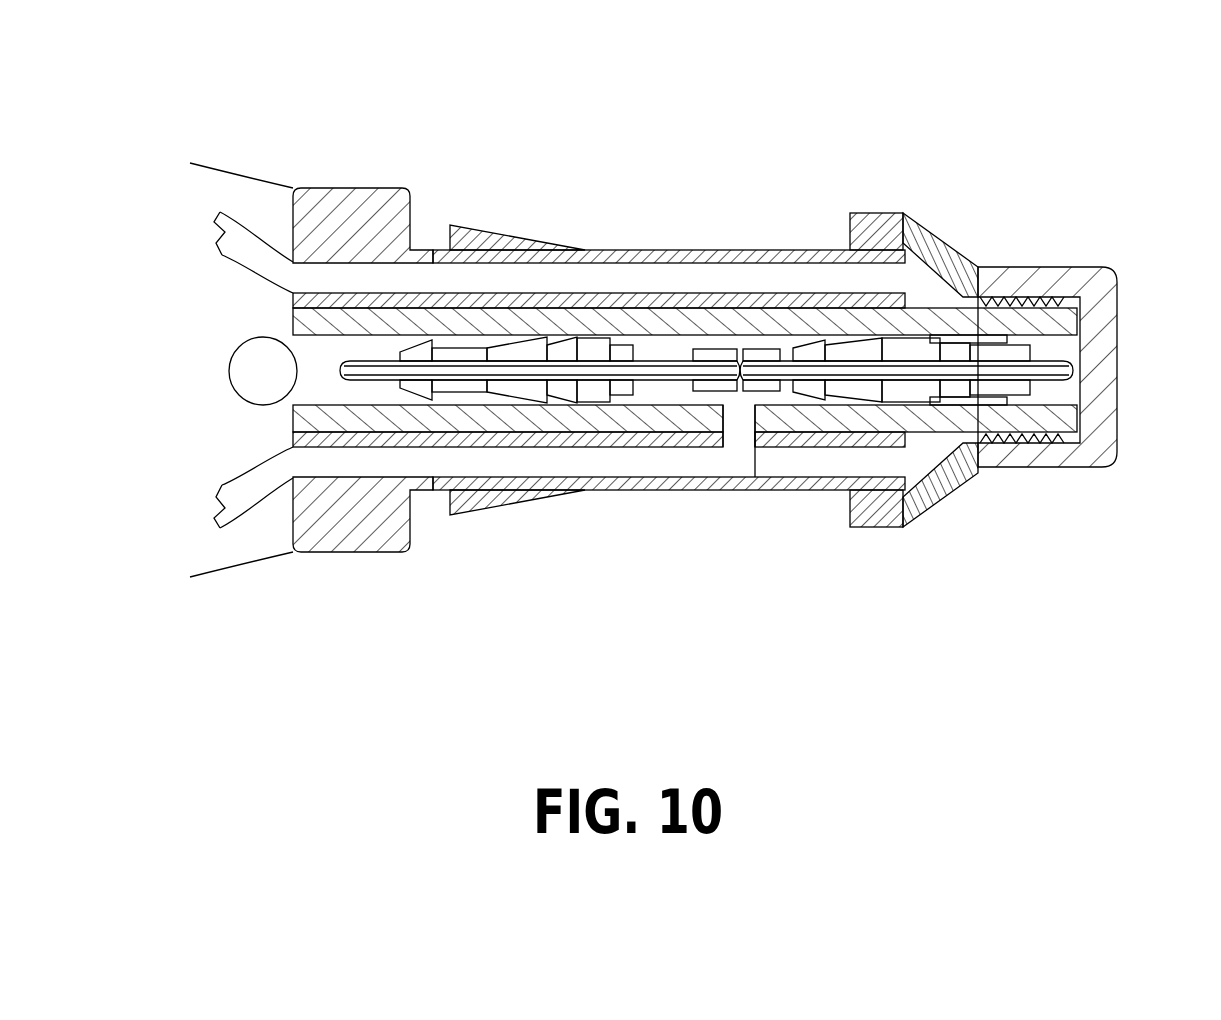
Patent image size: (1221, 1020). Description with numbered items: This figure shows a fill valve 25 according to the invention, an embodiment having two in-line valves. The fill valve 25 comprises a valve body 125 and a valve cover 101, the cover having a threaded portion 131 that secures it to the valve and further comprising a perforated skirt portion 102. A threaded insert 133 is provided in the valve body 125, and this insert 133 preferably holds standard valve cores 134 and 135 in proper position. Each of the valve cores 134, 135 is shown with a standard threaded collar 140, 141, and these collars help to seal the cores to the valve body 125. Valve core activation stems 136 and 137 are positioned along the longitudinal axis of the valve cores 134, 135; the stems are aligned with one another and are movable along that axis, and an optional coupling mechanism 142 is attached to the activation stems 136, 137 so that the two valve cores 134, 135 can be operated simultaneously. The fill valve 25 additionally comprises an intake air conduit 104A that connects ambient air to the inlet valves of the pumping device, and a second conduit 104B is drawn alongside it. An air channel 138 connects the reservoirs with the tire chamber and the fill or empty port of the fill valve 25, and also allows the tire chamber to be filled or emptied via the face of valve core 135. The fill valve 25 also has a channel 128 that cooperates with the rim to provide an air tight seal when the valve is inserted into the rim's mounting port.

The fill valve 25 is at (666, 140).
The valve cover 101 is at (1107, 270).
The perforated skirt portion 102 is at (920, 220).
The intake air conduit 104A is at (566, 280).
The second tube 104B is at (585, 465).
The valve body 125 is at (372, 188).
The channel 128 is at (430, 247).
The threaded portion 131 is at (1077, 443).
The threaded insert 133 is at (773, 303).
The valve core 134 is at (848, 382).
The valve core 135 is at (467, 385).
The valve core activation stem 136 is at (950, 343).
The valve core activation stem 137 is at (667, 363).
The air channel 138 is at (248, 364).
The threaded collar 140 is at (988, 403).
The threaded collar 141 is at (588, 337).
The coupling mechanism 142 is at (728, 360).